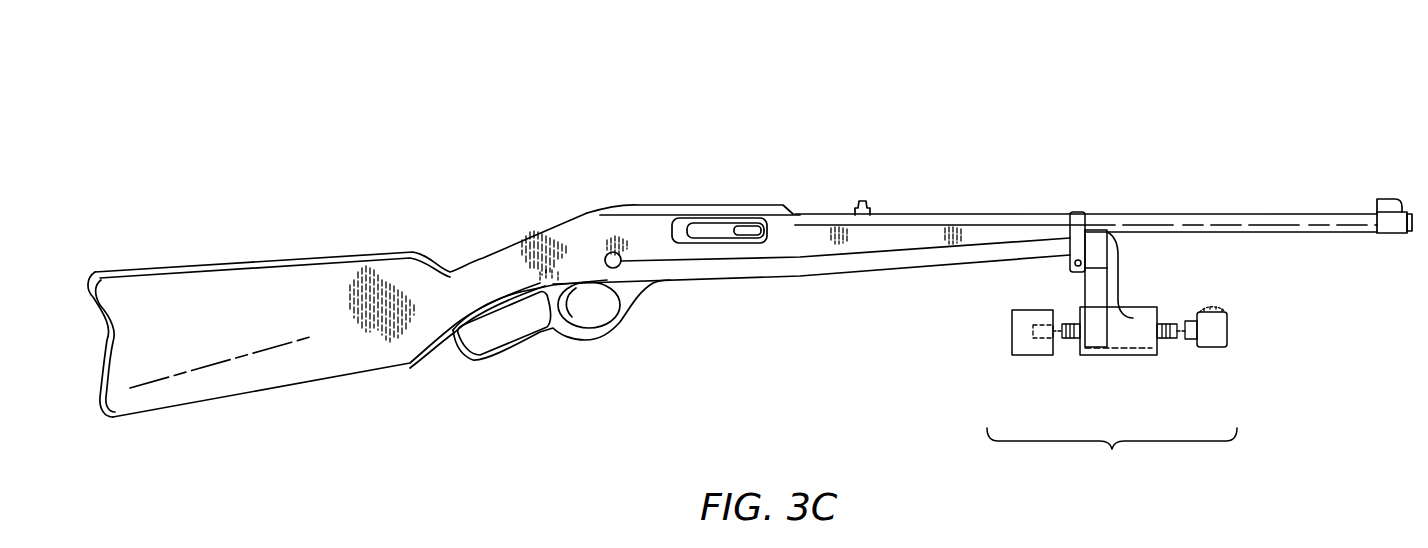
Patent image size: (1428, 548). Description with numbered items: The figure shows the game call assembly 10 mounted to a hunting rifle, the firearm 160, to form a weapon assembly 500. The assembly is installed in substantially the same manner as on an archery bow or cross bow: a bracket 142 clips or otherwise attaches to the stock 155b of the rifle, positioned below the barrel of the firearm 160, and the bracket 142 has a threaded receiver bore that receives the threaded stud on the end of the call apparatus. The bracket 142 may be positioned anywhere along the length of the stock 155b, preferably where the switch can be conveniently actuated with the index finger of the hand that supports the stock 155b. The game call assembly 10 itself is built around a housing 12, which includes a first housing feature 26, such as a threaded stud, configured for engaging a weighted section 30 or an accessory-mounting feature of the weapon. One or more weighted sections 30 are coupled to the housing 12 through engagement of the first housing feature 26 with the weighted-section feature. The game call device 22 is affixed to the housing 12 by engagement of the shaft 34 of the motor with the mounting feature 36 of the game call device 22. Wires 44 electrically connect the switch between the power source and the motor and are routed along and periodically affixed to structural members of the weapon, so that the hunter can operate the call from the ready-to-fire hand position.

The weapon assembly 500 is at (953, 102).
The firearm 160 is at (1013, 203).
The stock 155b is at (198, 300).
The bracket 142 is at (1085, 287).
The wires 44 is at (1115, 286).
The housing 12 is at (1126, 352).
The first housing feature 26 is at (1072, 340).
The shaft 34 is at (1165, 340).
The weighted section 30 is at (1033, 360).
The mounting feature 36 is at (1192, 345).
The game call device 22 is at (1212, 350).
The game call assembly 10 is at (1112, 455).